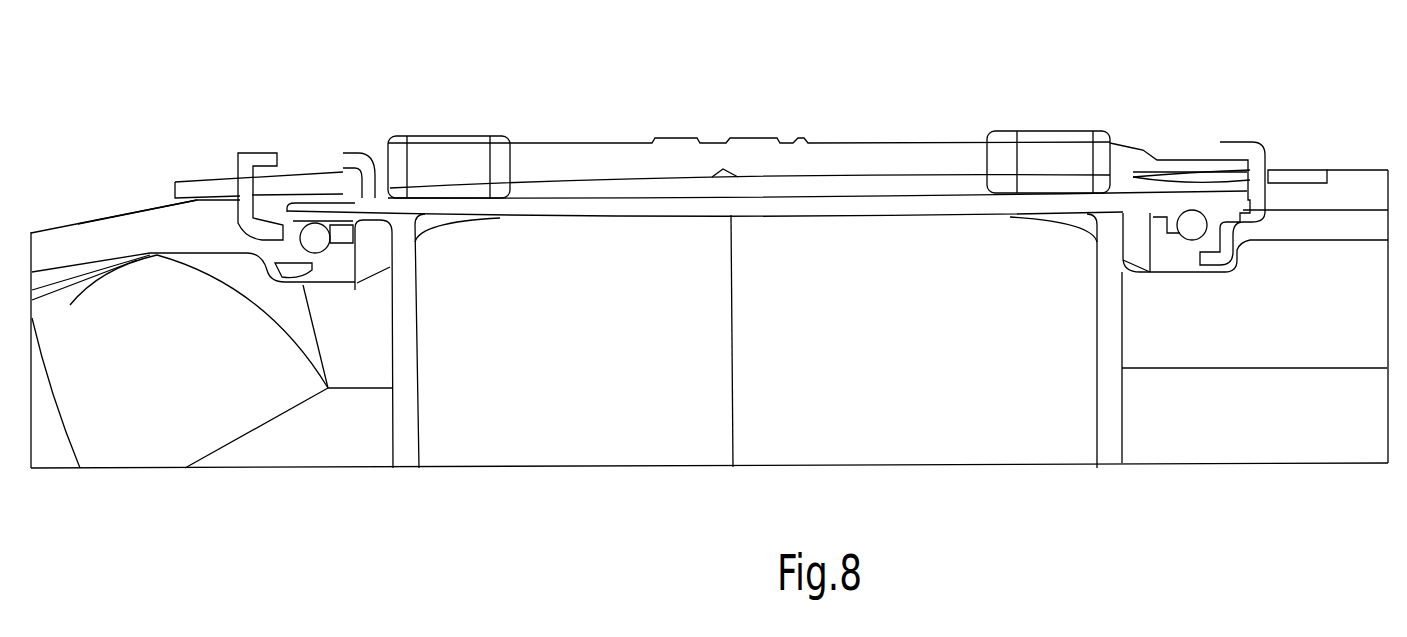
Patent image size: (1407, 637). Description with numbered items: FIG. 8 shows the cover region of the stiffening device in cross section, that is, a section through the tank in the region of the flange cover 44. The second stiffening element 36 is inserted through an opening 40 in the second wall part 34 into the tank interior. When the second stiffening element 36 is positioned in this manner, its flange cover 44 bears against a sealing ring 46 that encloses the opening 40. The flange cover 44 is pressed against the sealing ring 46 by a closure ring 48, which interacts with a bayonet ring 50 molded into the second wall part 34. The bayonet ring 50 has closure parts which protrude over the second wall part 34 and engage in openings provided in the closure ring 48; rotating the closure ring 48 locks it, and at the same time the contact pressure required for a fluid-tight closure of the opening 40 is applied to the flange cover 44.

The second wall part 34 is at (148, 238).
The second stiffening element 36 is at (1107, 430).
The opening 40 is at (1152, 243).
The flange cover 44 is at (890, 210).
The sealing ring 46 is at (313, 236).
The closure ring 48 is at (1195, 177).
The bayonet ring 50 is at (260, 157).